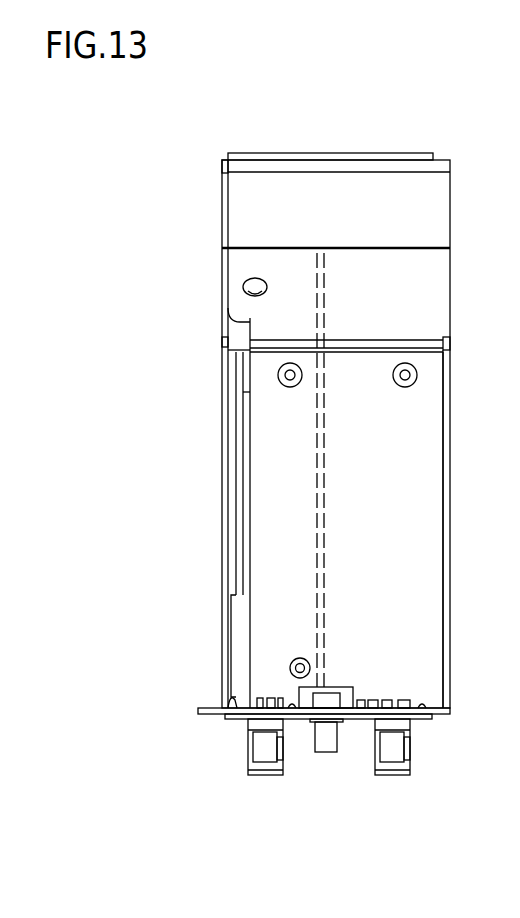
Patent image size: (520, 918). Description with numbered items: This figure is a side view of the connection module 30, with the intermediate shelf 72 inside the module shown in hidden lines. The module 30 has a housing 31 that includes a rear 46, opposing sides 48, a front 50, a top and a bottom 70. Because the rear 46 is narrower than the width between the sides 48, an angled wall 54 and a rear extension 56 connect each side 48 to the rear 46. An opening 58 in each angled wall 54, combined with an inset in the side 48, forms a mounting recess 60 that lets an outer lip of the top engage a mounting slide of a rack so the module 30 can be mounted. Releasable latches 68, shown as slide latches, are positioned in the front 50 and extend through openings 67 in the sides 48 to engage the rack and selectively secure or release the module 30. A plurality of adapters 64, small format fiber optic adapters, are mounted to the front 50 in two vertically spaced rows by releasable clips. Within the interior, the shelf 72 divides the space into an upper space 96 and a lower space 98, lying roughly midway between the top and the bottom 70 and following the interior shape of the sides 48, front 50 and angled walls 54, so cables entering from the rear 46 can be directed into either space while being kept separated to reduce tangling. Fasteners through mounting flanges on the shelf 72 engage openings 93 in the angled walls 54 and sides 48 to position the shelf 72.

The module 30 is at (186, 763).
The housing 31 is at (210, 228).
The rear 46 is at (323, 157).
The opposing sides 48 is at (407, 660).
The front 50 is at (202, 710).
The angled wall 54 is at (409, 313).
The rear extension 56 is at (401, 220).
The opening 58 is at (251, 332).
The mounting recess 60 is at (224, 465).
The adapters 64 is at (260, 752).
The openings 67 is at (337, 687).
The releasable latches 68 is at (323, 748).
The bottom 70 is at (445, 613).
The shelf 72 is at (325, 485).
The openings 93 is at (263, 280).
The upper space 96 is at (291, 554).
The lower space 98 is at (394, 554).